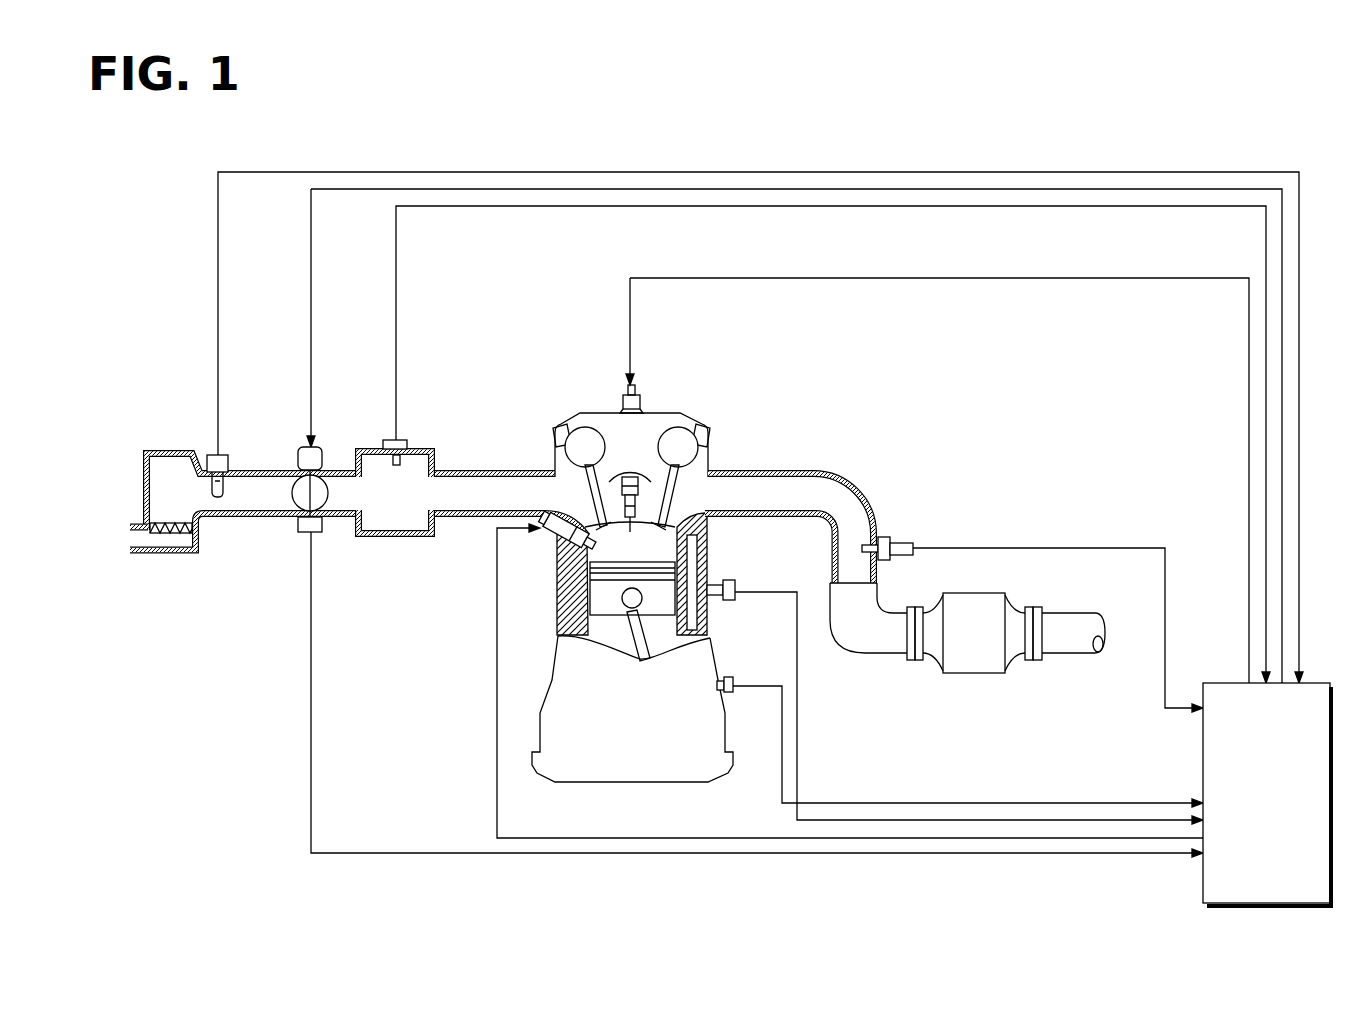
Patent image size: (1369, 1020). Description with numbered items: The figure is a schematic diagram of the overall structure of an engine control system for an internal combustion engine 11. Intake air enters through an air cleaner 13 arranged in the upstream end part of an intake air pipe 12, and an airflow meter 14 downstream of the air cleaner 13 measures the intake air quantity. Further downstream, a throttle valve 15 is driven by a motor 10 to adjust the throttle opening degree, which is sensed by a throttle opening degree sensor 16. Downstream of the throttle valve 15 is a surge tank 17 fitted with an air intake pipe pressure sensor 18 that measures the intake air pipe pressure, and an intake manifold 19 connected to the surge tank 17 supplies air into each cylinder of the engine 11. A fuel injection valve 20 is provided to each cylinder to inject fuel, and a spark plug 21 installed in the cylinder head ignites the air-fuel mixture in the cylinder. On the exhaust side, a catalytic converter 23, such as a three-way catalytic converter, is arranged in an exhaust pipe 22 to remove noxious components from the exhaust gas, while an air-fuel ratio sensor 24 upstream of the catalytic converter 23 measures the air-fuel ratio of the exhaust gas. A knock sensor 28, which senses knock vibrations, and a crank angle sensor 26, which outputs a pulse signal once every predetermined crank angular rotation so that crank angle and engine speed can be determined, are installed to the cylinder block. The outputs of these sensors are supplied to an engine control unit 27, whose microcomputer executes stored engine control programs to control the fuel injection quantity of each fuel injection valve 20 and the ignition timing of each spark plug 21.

The motor 10 is at (327, 457).
The internal combustion engine 11 is at (682, 413).
The intake air pipe 12 is at (256, 470).
The air cleaner 13 is at (165, 537).
The airflow meter 14 is at (210, 455).
The throttle valve 15 is at (323, 497).
The throttle opening degree sensor 16 is at (300, 533).
The surge tank 17 is at (371, 452).
The air intake pipe pressure sensor 18 is at (406, 440).
The intake manifold 19 is at (480, 470).
The fuel injection valve 20 is at (545, 535).
The spark plug 21 is at (648, 470).
The exhaust pipe 22 is at (816, 470).
The catalytic converter 23 is at (988, 592).
The air-fuel ratio sensor 24 is at (880, 537).
The crank angle sensor 26 is at (730, 677).
The engine control unit (ECU) 27 is at (1203, 885).
The knock sensor 28 is at (727, 580).